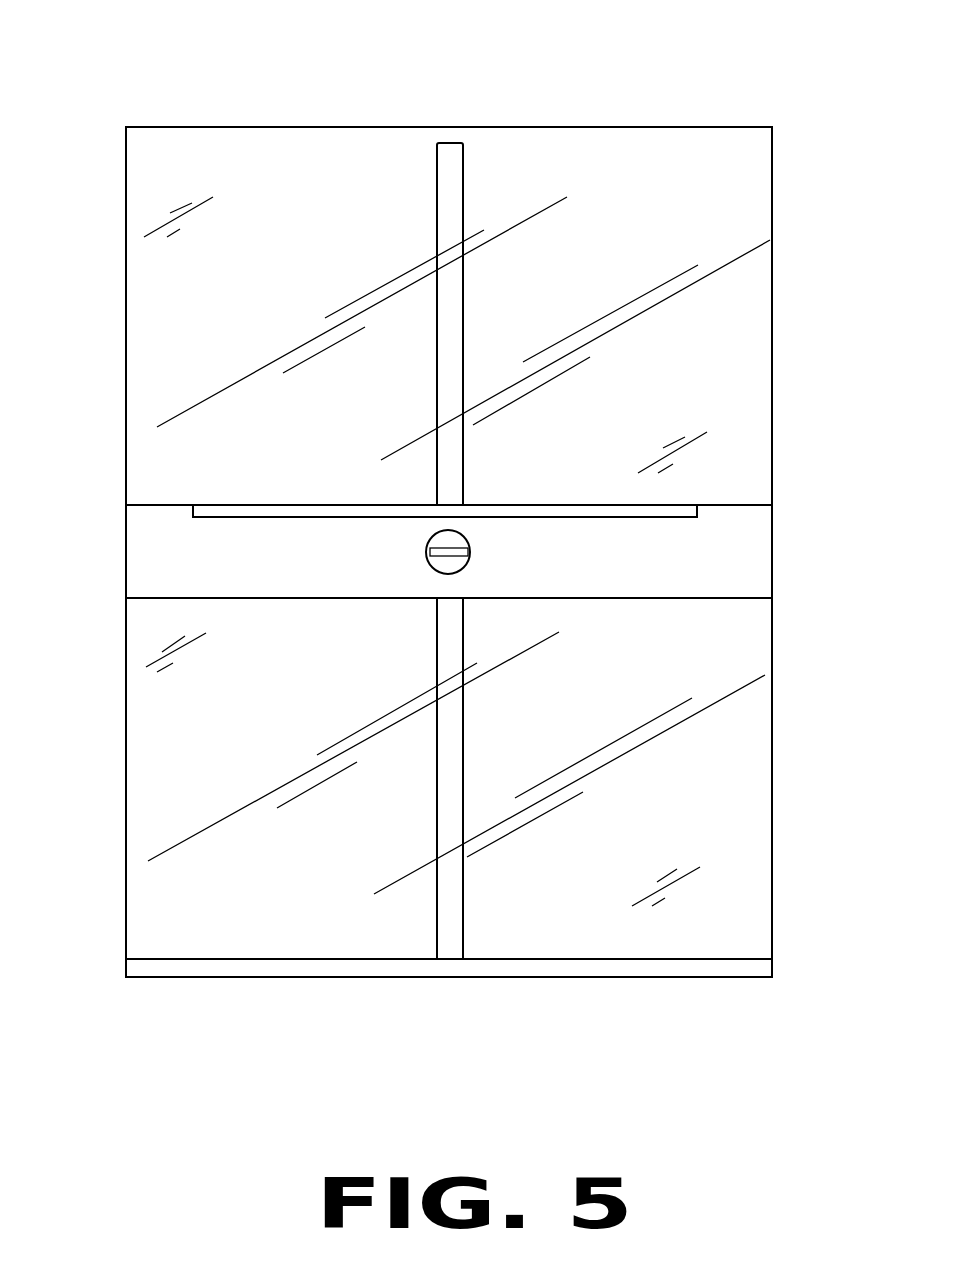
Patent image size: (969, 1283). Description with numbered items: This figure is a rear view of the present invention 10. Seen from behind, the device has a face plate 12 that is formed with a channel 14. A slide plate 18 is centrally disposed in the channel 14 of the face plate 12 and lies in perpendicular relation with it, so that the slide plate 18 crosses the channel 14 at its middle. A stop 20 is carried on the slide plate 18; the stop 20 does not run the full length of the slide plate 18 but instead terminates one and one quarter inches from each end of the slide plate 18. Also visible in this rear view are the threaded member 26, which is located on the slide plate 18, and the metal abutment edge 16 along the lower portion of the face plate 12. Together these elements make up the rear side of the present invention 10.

The present invention 10 is at (815, 123).
The face plate 12 is at (772, 773).
The channel 14 is at (452, 943).
The metal abutment edge 16 is at (610, 967).
The slide plate 18 is at (213, 573).
The stop 20 is at (697, 505).
The threaded member 26 is at (470, 550).